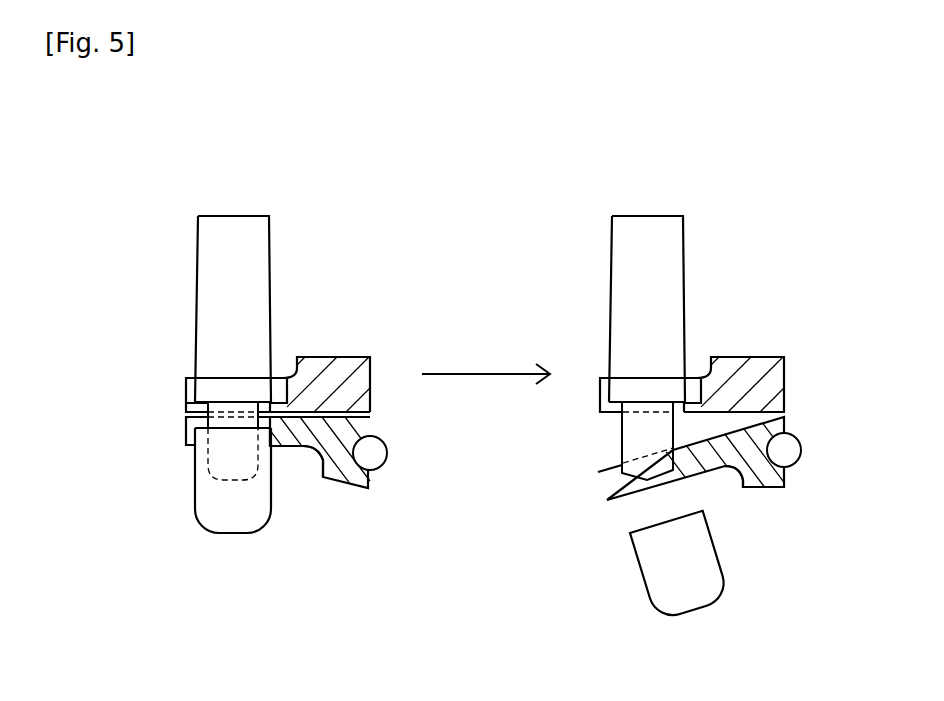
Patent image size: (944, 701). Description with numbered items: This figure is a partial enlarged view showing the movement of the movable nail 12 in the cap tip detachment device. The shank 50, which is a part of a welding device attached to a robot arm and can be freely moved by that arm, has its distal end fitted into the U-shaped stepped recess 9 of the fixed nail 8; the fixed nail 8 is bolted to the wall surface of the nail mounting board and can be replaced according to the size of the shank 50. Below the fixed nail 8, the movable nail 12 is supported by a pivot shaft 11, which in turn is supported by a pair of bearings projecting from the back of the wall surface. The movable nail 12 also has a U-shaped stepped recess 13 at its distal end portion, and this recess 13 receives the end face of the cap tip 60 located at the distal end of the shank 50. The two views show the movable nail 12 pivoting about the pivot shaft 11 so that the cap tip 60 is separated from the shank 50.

The fixed nail 8 is at (346, 366).
The U-shaped stepped recess 9 is at (262, 400).
The pivot shaft 11 is at (377, 462).
The movable nail 12 is at (333, 474).
The U-shaped stepped recess 13 is at (263, 429).
The shank 50 is at (222, 262).
The cap tip 60 is at (218, 497).